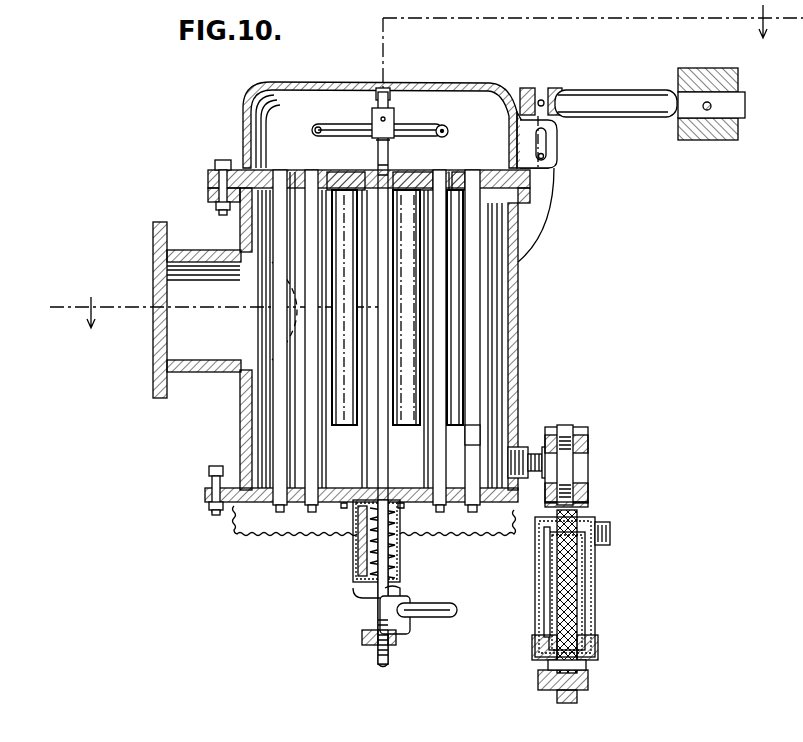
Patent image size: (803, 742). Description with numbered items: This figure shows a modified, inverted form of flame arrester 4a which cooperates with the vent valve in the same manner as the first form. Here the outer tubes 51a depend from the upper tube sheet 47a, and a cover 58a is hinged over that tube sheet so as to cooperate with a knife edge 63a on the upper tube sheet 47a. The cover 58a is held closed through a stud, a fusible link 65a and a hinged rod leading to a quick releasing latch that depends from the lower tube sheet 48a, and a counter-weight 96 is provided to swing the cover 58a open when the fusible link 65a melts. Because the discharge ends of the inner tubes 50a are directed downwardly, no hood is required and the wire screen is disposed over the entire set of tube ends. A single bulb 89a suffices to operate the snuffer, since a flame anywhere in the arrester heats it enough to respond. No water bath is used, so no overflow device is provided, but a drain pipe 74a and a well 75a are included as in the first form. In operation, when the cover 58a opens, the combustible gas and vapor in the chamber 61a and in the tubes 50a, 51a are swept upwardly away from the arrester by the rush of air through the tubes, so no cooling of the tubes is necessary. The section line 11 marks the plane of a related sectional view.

The section line 11- 11 is at (414, 166).
The cover 58a is at (418, 82).
The chamber 61a is at (333, 124).
The fusible link 65a is at (390, 120).
The bulb 89a is at (448, 131).
The outer tubes 51a is at (456, 176).
The flame arrester 4a is at (556, 317).
The upper tube sheet 47a is at (223, 168).
The knife edge 63a is at (522, 172).
The counter-weight 96 is at (740, 80).
The lower tube sheet 48a is at (456, 508).
The inner tubes 50a is at (472, 448).
The drain pipe 74a is at (534, 448).
The well 75a is at (597, 593).